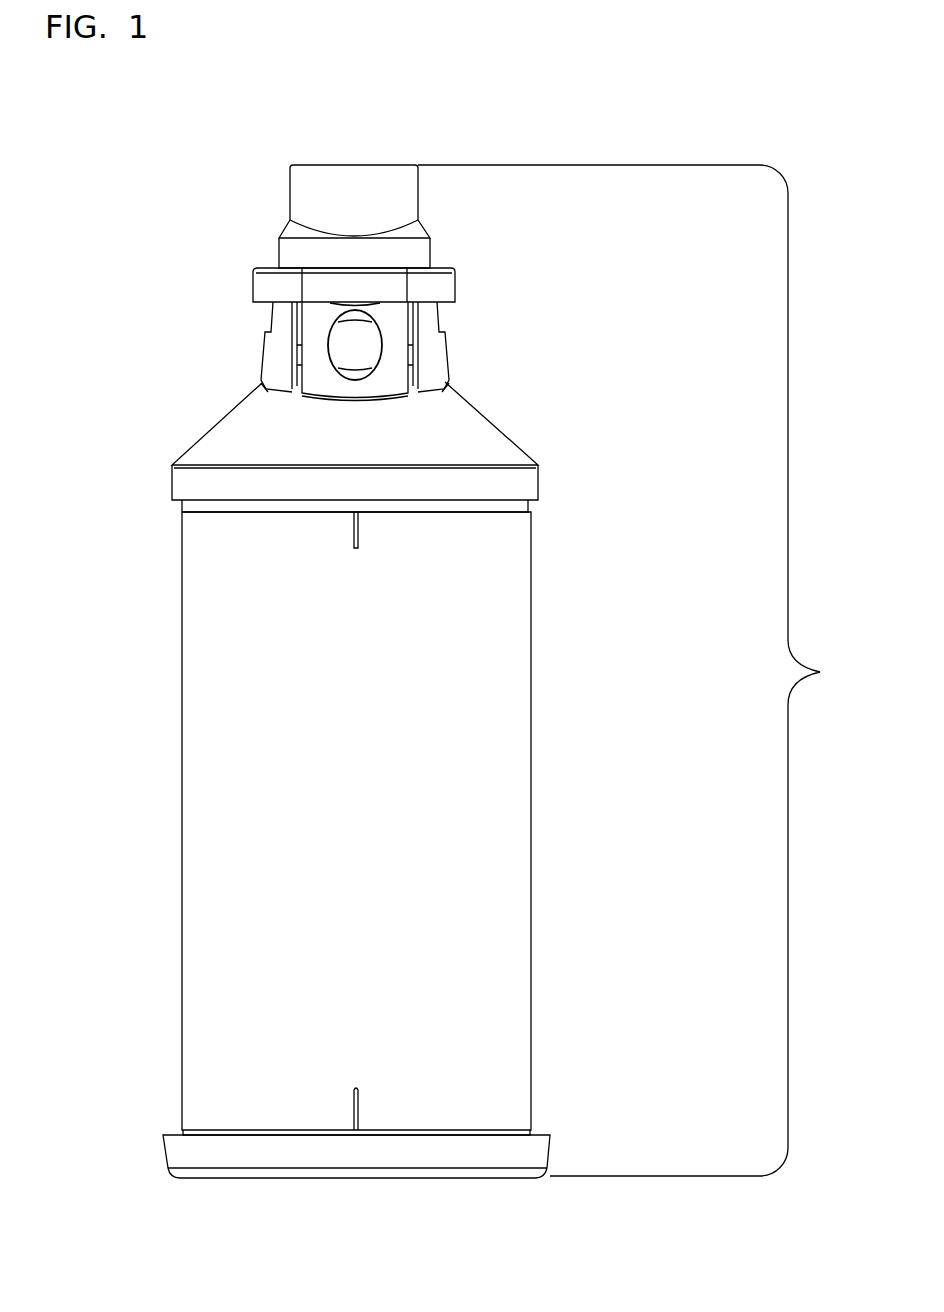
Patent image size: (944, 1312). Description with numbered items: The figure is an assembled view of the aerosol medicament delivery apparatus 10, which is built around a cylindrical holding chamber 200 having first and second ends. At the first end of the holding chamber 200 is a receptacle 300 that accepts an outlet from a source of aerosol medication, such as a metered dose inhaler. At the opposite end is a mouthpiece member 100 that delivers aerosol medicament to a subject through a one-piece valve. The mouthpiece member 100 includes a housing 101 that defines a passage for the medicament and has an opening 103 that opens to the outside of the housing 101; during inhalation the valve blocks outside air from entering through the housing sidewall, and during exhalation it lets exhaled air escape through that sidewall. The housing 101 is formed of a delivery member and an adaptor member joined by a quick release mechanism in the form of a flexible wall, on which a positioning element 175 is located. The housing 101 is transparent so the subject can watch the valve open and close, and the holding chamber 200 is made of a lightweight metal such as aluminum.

The aerosol medicament delivery apparatus 10 is at (820, 672).
The mouthpiece member 100 is at (388, 338).
The housing 101 is at (262, 442).
The opening 103 is at (442, 317).
The positioning element 175 is at (357, 347).
The holding chamber 200 is at (615, 483).
The receptacle 300 is at (678, 1136).